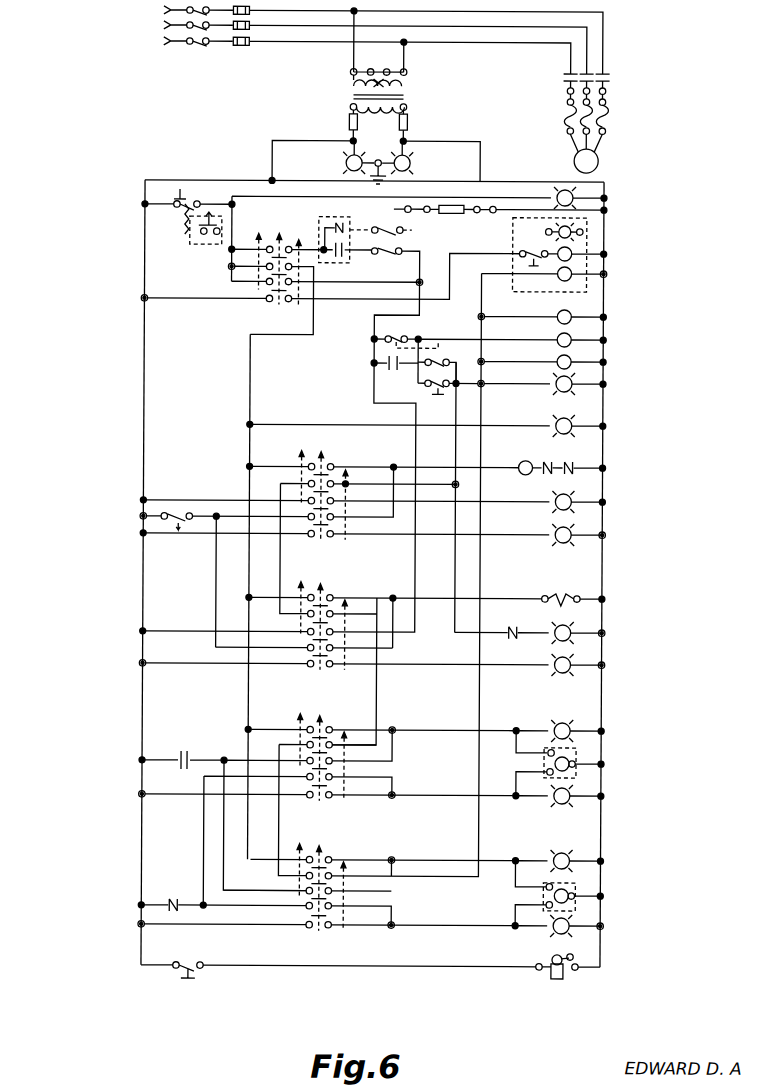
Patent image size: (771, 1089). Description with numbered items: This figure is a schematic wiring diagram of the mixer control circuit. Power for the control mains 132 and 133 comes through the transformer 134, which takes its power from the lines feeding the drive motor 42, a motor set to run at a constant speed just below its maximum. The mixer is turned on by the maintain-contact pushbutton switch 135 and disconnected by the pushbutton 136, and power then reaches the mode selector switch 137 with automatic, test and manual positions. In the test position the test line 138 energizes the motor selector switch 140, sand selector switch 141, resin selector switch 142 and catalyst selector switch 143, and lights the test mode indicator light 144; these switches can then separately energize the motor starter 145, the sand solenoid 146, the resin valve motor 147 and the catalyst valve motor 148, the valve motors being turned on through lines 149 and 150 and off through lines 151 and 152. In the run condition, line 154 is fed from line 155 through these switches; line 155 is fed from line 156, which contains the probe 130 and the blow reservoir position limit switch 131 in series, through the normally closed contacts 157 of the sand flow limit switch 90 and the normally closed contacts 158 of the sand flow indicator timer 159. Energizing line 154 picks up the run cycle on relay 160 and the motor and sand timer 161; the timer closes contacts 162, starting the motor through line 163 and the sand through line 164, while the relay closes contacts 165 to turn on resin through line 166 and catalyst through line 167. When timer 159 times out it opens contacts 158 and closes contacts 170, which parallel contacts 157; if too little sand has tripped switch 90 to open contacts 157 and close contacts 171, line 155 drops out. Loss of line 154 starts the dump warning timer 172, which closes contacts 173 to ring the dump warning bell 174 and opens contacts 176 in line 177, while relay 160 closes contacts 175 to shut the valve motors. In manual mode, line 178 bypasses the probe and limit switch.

The drive motor 42 is at (597, 156).
The sand flow limit switch 90 is at (446, 338).
The probe 130 is at (316, 213).
The blow reservoir position limit switch 131 is at (404, 241).
The control main 132 is at (143, 312).
The control main 133 is at (604, 410).
The transformer 134 is at (406, 98).
The pushbutton switch 135 is at (178, 200).
The pushbutton 136 is at (222, 202).
The mode selector switch 137 is at (256, 308).
The test line 138 is at (249, 392).
The motor selector switch 140 is at (337, 461).
The sand selector switch 141 is at (337, 595).
The resin selector switch 142 is at (332, 722).
The catalyst selector switch 143 is at (333, 852).
The test mode indicator light 144 is at (553, 419).
The motor starter 145 is at (527, 461).
The solenoid 146 is at (546, 594).
The resin valve motor 147 is at (580, 758).
The catalyst valve motor 148 is at (580, 887).
The resin valve on line 149 is at (492, 729).
The catalyst valve on line 150 is at (497, 859).
The resin valve off line 151 is at (495, 796).
The catalyst valve off line 152 is at (418, 927).
The run line 154 is at (478, 677).
The automatic supply line 155 is at (455, 453).
The supply line 156 is at (418, 260).
The normally closed contacts 157 is at (398, 336).
The normally closed contacts 158 is at (434, 389).
The sand flow indicator timer 159 is at (570, 338).
The run cycle on relay 160 is at (570, 360).
The motor and sand timer 161 is at (570, 312).
The switch contacts 162 is at (180, 510).
The motor starting line 163 is at (352, 522).
The sand line 164 is at (273, 652).
The switch contacts 165 is at (188, 756).
The resin line 166 is at (394, 750).
The catalyst line 167 is at (394, 888).
The timer contacts 170 is at (373, 366).
The limit switch contacts 171 is at (441, 349).
The dump warning timer 172 is at (567, 271).
The dump warning timer contacts 173 is at (199, 976).
The dump warning bell 174 is at (560, 982).
The relay contacts 175 is at (178, 899).
The dump warning timer contacts 176 is at (498, 252).
The line 177 is at (360, 302).
The bypass line 178 is at (334, 283).